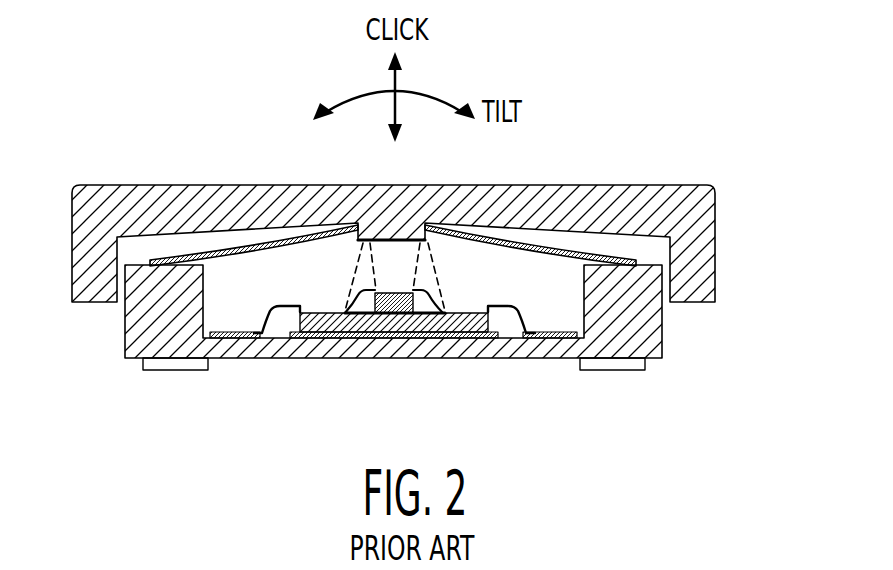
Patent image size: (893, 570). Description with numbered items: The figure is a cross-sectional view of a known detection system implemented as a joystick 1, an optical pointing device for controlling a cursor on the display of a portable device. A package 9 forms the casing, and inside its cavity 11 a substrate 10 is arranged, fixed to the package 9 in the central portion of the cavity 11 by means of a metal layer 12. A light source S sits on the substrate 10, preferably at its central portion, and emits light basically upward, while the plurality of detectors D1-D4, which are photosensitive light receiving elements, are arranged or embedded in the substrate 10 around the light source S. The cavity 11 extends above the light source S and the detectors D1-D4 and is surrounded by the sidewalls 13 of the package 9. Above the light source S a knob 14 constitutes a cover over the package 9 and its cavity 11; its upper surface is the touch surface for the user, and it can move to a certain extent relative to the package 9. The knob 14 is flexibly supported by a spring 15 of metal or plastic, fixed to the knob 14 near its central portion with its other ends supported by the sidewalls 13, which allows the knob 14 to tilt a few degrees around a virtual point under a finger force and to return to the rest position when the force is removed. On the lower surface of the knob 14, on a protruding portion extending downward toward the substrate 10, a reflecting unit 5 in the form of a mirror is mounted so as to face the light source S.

The joystick 1 is at (126, 108).
The reflecting unit 5 is at (378, 237).
The package 9 is at (268, 353).
The substrate 10 is at (490, 347).
The cavity 11 is at (522, 266).
The metal layer 12 is at (443, 336).
The sidewalls 13 is at (142, 337).
The knob 14 is at (397, 203).
The spring 15 is at (207, 250).
The light source S is at (398, 293).
The detectors D1-D4 is at (432, 317).